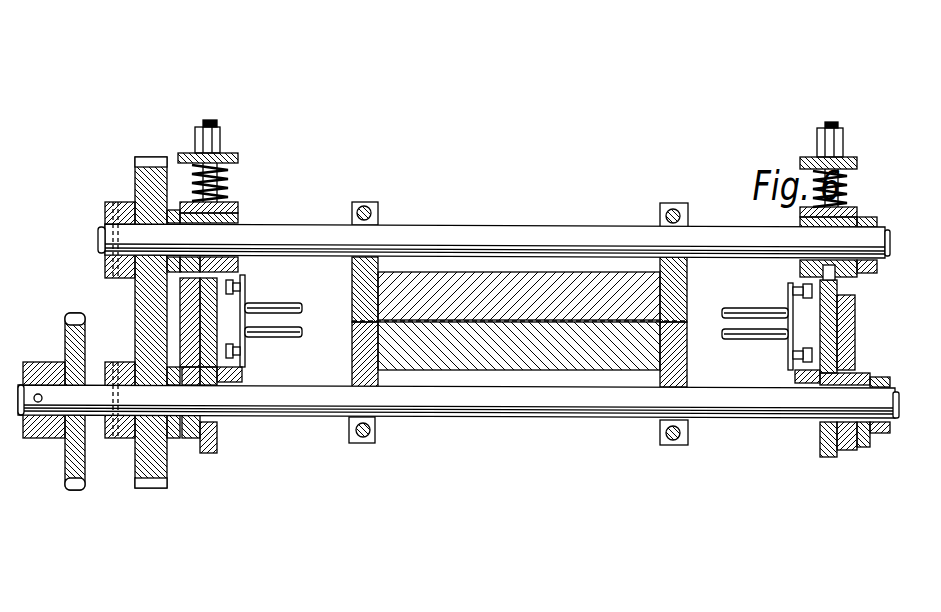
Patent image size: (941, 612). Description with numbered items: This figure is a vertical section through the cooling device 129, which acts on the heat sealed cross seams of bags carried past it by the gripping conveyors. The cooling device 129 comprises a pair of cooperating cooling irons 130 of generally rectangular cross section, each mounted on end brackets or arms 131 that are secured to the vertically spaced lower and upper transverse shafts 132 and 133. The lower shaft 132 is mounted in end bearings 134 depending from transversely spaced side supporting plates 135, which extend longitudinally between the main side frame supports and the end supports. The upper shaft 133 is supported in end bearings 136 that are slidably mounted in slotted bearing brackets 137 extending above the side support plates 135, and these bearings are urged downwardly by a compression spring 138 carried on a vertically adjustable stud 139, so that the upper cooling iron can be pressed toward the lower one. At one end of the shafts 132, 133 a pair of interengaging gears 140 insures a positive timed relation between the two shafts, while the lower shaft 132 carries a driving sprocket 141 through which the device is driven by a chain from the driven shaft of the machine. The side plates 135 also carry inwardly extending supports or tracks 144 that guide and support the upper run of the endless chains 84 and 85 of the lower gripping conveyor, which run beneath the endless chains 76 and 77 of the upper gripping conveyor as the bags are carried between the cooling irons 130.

The endless chain 76 is at (793, 293).
The endless chain 77 is at (239, 284).
The endless chain 84 is at (803, 353).
The endless chain 85 is at (232, 366).
The cooling device 129 is at (841, 234).
The cooling irons 130 is at (510, 277).
The end brackets or arms 131 is at (352, 288).
The lower transverse shaft 132 is at (749, 420).
The upper transverse shaft 133 is at (730, 236).
The end bearings 134 is at (222, 430).
The side supporting plates 135 is at (218, 310).
The end bearings 136 is at (800, 274).
The slotted bearing brackets 137 is at (835, 284).
The compression spring 138 is at (816, 182).
The vertically adjustable stud 139 is at (847, 193).
The interengaging gears 140 is at (137, 343).
The driving sprocket 141 is at (50, 362).
The supports or tracks 144 is at (242, 369).